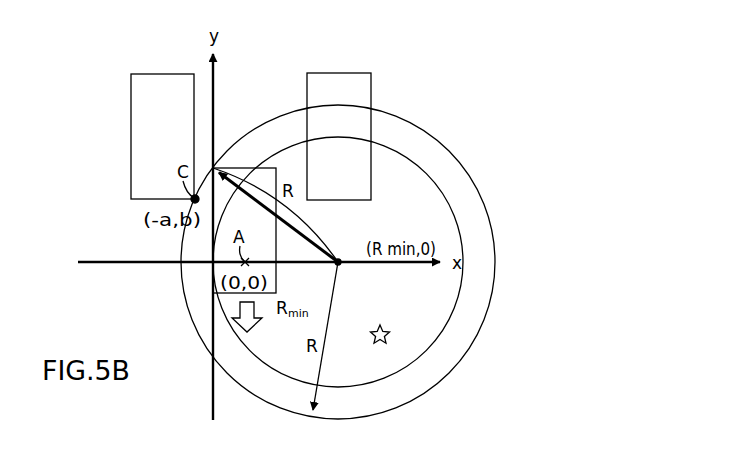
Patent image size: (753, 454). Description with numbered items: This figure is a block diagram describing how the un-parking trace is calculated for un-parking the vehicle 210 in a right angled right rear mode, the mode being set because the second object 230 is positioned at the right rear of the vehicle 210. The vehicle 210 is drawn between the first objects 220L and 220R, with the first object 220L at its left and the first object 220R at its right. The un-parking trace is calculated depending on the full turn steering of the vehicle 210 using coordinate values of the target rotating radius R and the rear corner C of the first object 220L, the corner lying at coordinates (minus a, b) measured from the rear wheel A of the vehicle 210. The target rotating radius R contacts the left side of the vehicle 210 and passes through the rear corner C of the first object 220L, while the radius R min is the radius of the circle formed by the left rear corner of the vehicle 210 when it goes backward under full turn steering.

The vehicle 210 is at (243, 167).
The first object 220L is at (163, 80).
The first object 220R is at (337, 80).
The second object 230 is at (399, 336).